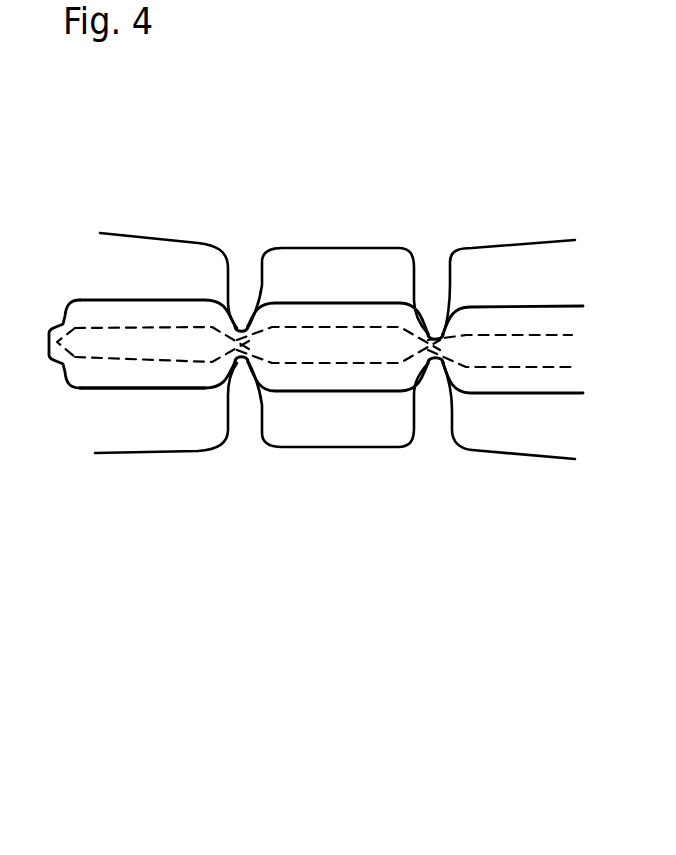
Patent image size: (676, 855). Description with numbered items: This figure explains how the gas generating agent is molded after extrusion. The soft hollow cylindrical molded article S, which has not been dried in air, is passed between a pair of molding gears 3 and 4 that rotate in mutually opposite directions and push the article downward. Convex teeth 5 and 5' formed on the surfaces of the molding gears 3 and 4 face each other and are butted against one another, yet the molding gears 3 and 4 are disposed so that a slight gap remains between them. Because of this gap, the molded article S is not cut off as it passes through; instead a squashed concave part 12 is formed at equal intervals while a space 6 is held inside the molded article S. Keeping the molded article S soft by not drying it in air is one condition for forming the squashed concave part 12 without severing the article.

The molding gear 3 is at (525, 473).
The molding gear 4 is at (527, 205).
The convex tooth 5 is at (261, 460).
The convex tooth 5' is at (338, 229).
The space 6 is at (133, 350).
The squashed concave part 12 is at (237, 327).
The molded article S is at (180, 377).